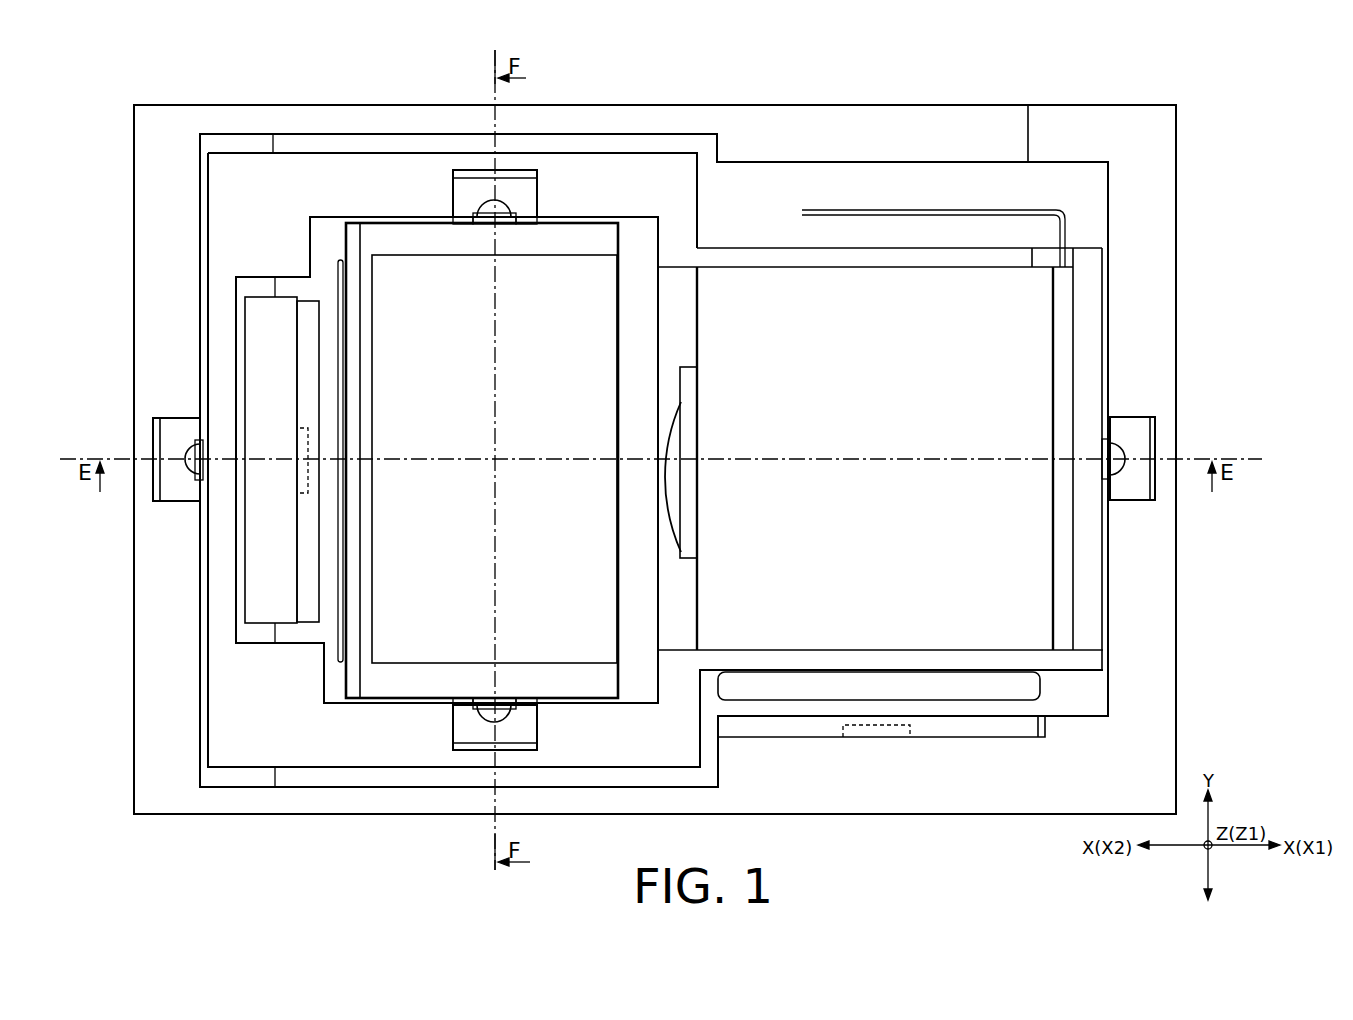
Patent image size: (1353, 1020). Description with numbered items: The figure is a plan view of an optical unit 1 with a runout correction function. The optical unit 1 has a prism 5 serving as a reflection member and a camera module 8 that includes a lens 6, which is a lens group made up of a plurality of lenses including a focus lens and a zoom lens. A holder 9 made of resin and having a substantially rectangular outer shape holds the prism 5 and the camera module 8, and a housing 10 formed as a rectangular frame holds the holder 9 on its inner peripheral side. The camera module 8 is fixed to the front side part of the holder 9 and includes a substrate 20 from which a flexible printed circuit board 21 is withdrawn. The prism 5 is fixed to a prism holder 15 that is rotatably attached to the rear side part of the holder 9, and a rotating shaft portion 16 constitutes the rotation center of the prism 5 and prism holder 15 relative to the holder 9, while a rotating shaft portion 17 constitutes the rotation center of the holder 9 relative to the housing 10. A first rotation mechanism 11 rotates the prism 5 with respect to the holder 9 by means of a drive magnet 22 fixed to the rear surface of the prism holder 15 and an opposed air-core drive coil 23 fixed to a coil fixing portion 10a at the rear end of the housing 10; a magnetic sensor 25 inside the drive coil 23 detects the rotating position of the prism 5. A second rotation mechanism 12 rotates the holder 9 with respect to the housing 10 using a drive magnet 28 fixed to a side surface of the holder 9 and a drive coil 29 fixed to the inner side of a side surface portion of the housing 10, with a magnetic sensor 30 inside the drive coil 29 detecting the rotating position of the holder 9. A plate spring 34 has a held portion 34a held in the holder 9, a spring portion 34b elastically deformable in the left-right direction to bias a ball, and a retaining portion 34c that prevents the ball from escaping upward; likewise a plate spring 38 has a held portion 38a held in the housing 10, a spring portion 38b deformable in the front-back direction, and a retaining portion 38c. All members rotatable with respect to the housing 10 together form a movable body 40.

The optical unit 1 is at (1193, 91).
The prism 5 is at (590, 254).
The lens 6 is at (668, 505).
The camera module 8 is at (781, 266).
The holder 9 is at (700, 183).
The housing 10 is at (815, 816).
The coil fixing portion 10a is at (258, 636).
The first rotation mechanism 11 is at (292, 226).
The second rotation mechanism 12 is at (909, 760).
The prism holder 15 is at (556, 222).
The rotating shaft portion 16 is at (468, 126).
The rotating shaft portion 17 is at (1234, 432).
The substrate 20 is at (1074, 318).
The flexible printed circuit board 21 is at (922, 210).
The drive magnet 22 is at (338, 270).
The drive coil 23 is at (320, 357).
The magnetic sensor 25 is at (308, 445).
The drive magnet 28 is at (981, 704).
The drive coil 29 is at (771, 740).
The magnetic sensor 30 is at (880, 725).
The plate spring 34 is at (445, 460).
The held portion 34a is at (453, 195).
The spring portion 34b is at (463, 224).
The retaining portion 34c is at (508, 224).
The plate spring 38 is at (177, 416).
The held portion 38a is at (176, 503).
The spring portion 38b is at (203, 433).
The retaining portion 38c is at (205, 470).
The movable body 40 is at (657, 152).